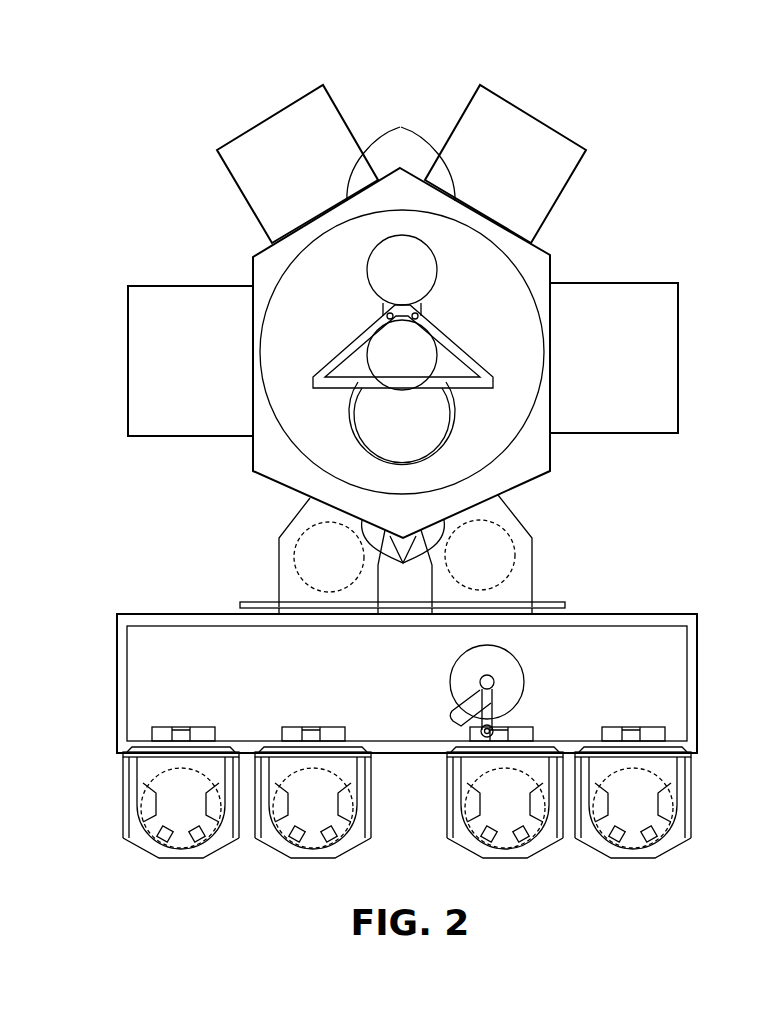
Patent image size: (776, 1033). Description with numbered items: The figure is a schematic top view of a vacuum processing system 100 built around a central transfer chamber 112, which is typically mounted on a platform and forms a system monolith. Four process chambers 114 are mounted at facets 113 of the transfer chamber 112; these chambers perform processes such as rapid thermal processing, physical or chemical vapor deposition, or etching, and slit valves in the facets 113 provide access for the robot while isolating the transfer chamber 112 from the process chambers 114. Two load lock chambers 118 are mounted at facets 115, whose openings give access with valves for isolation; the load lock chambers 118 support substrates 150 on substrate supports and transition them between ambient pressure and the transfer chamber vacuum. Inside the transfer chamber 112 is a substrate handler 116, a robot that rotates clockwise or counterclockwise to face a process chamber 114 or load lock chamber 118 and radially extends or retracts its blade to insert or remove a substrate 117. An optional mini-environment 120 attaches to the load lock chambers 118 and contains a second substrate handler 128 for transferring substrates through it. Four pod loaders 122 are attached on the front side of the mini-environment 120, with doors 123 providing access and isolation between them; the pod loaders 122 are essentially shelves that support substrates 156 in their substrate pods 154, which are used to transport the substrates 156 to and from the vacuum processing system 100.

The vacuum processing system 100 is at (553, 237).
The transfer chamber 112 is at (552, 461).
The facets 113 is at (192, 473).
The process chambers 114 is at (557, 125).
The facets 115 is at (405, 564).
The substrate handler 116 is at (462, 300).
The substrate 117 is at (373, 290).
The load lock chambers 118 is at (279, 575).
The mini-environment 120 is at (690, 614).
The pod loaders 122 is at (440, 824).
The doors 123 is at (212, 741).
The substrate handler 128 is at (514, 659).
The substrates 150 is at (293, 542).
The substrate pods 154 is at (478, 843).
The substrates 156 is at (684, 767).